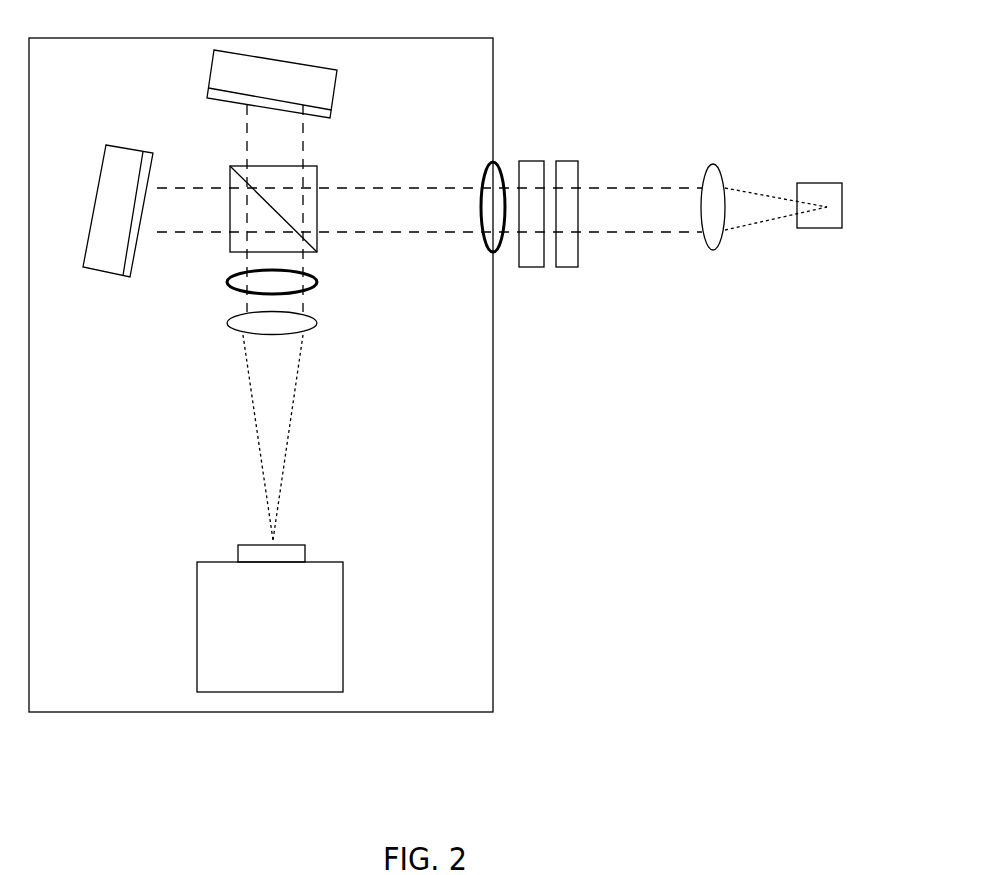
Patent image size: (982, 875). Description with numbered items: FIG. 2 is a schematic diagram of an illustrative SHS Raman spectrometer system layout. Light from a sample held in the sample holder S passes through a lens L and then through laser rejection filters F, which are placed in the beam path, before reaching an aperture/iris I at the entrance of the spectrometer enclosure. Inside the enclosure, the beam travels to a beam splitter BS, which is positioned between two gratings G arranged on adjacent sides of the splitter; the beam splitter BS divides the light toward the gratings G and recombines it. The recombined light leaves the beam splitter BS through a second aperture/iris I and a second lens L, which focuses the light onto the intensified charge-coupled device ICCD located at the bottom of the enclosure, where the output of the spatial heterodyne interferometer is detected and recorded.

The grating G is at (198, 163).
The beam splitter BS is at (249, 189).
The aperture/iris I is at (354, 208).
The lens L is at (476, 251).
The laser rejection filter F is at (548, 231).
The sample holder S is at (819, 226).
The intensified charge-coupled device ICCD is at (233, 618).